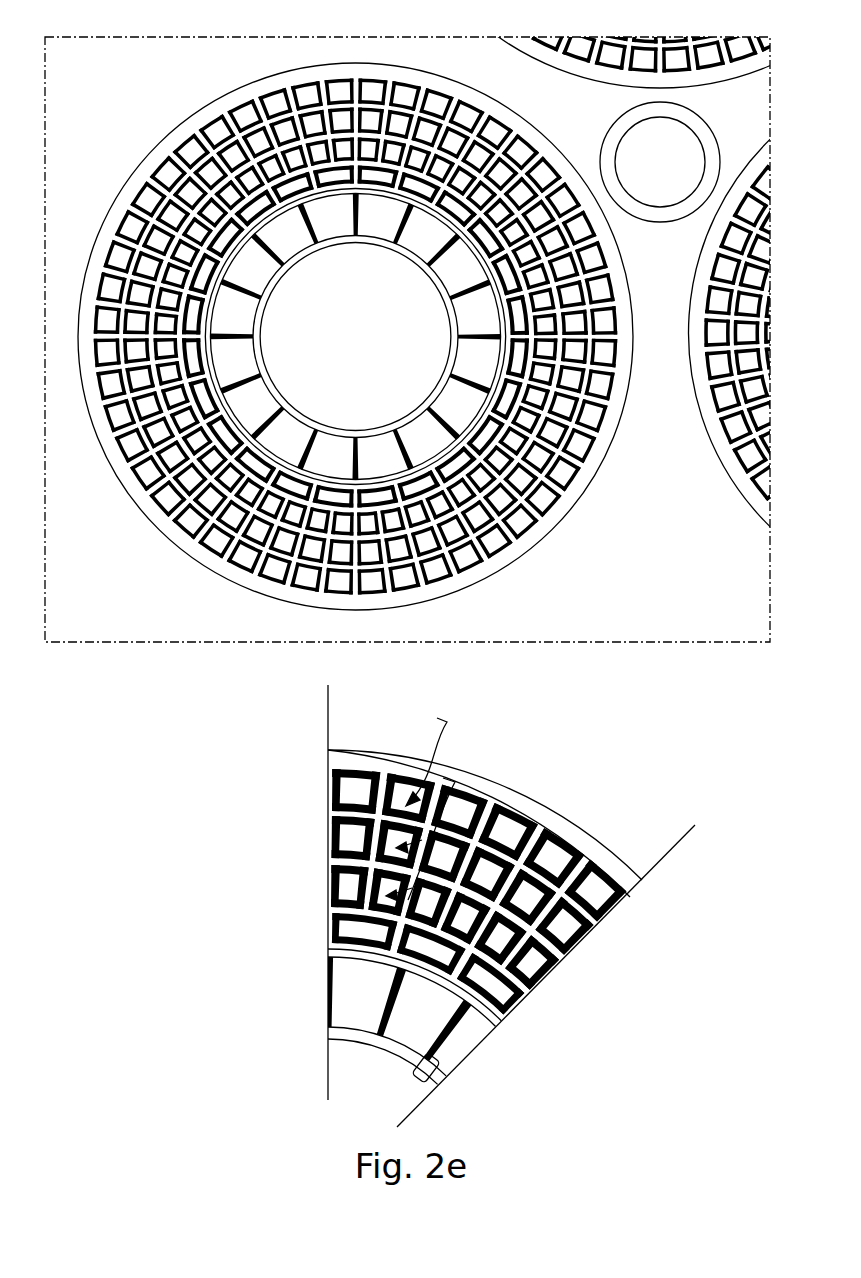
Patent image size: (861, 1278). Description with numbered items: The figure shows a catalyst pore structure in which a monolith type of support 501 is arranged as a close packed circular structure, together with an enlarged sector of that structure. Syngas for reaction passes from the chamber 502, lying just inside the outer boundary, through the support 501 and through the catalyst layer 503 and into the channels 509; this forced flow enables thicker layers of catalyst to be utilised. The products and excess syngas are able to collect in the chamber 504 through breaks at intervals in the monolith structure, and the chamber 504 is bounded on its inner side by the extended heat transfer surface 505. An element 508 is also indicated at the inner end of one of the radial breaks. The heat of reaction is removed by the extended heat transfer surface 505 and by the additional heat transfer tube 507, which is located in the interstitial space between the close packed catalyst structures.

The monolith type of support 501 is at (563, 823).
The chamber 502 is at (533, 783).
The catalyst layer 503 is at (638, 887).
The chamber 504 is at (497, 1032).
The extended heat transfer surface 505 is at (437, 1083).
The additional heat transfer tube 507 is at (660, 162).
The channel end 508 is at (470, 1053).
The channels 509 is at (572, 842).